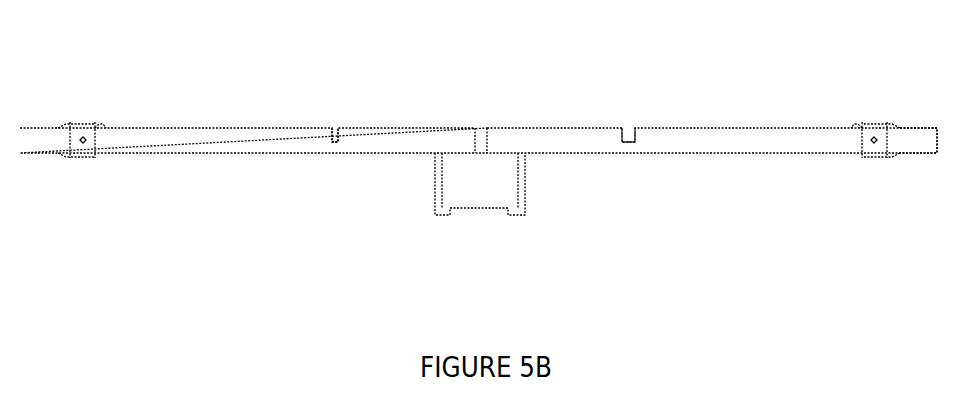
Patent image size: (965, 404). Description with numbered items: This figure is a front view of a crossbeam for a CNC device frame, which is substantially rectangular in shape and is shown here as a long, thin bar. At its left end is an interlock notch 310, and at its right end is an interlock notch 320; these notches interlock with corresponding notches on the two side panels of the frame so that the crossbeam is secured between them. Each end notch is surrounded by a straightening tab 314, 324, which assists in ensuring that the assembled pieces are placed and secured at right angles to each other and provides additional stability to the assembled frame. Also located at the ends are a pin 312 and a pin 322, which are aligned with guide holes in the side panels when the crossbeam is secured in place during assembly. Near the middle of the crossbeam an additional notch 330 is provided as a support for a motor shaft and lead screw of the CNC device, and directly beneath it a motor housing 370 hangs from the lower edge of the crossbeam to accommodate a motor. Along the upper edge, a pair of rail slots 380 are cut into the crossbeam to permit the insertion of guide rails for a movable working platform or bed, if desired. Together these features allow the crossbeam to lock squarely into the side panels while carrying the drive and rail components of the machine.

The interlock notch 310 is at (63, 63).
The pin 312 is at (64, 93).
The straightening tab 314 is at (103, 127).
The interlock notch 320 is at (912, 63).
The pin 322 is at (899, 94).
The straightening tab 324 is at (855, 125).
The notch 330 is at (477, 142).
The motor housing 370 is at (485, 190).
The rail slot 380 is at (483, 90).